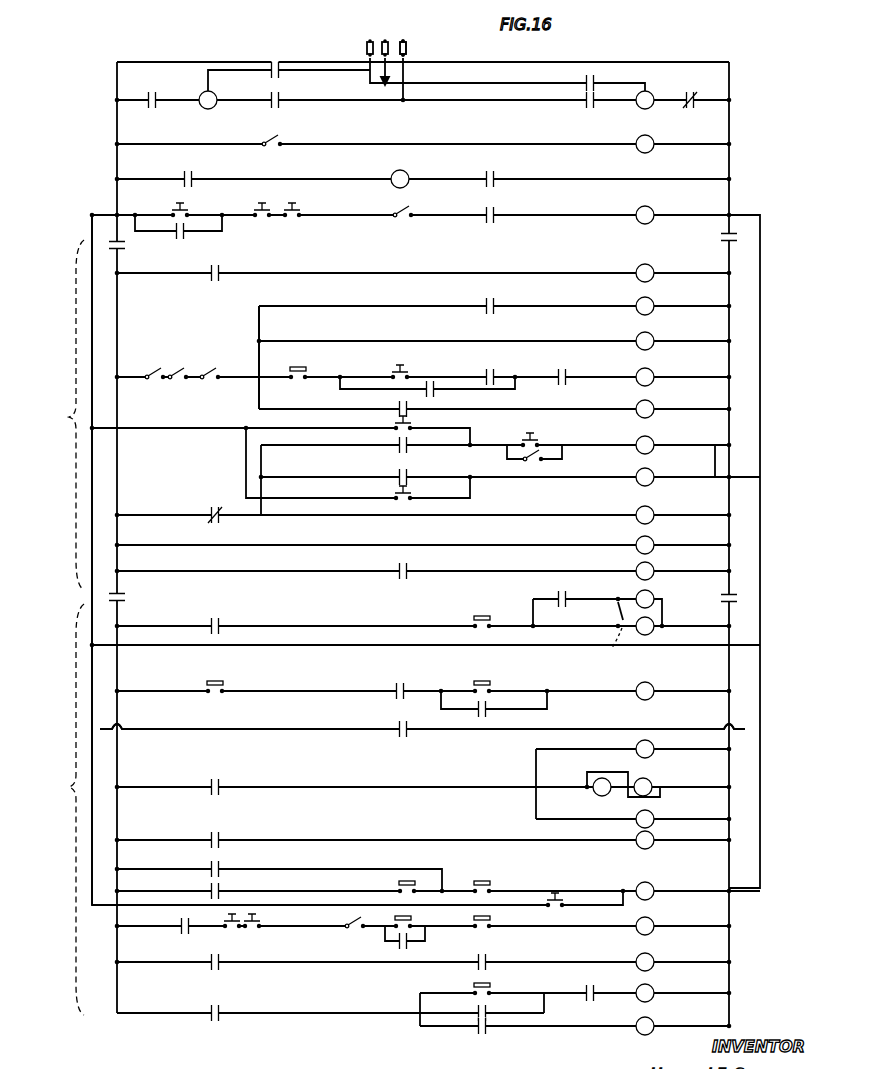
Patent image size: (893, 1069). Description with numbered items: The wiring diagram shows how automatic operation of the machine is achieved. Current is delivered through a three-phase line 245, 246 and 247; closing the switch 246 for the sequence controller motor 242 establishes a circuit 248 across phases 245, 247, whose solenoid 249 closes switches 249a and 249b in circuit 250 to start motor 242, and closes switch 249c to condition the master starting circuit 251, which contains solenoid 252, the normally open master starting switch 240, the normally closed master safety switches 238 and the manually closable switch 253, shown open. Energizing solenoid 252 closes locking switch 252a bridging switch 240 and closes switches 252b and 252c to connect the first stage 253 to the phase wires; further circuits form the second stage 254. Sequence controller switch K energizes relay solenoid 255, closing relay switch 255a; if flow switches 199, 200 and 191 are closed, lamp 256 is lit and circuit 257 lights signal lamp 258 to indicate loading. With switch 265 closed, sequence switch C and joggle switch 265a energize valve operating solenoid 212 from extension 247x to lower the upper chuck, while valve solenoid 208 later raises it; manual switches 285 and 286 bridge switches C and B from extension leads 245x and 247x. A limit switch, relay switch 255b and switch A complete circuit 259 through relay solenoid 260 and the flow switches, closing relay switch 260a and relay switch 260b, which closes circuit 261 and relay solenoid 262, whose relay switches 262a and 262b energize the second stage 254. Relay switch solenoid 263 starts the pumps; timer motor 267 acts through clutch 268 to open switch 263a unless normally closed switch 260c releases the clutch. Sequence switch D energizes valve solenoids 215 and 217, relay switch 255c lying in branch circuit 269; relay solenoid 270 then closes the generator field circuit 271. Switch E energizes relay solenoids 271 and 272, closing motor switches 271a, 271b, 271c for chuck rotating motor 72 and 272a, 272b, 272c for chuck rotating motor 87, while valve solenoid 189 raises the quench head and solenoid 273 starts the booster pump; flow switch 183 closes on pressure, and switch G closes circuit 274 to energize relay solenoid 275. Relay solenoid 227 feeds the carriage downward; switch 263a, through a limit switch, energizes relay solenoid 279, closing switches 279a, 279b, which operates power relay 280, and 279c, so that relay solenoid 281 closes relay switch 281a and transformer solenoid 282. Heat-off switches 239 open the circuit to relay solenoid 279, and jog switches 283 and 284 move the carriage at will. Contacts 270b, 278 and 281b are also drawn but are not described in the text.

The phase line 245 is at (172, 62).
The switch 246 is at (405, 65).
The phase line 247 is at (612, 62).
The motor switch 271a is at (148, 99).
The motor switch 271b is at (279, 74).
The motor switch 271c is at (279, 104).
The chuck rotating motor 72 is at (209, 110).
The chuck rotating motor 87 is at (652, 96).
The motor switch 272a is at (589, 83).
The motor switch 272b is at (590, 104).
The motor switch 272c is at (692, 109).
The circuit 248 is at (364, 134).
The solenoid 249 is at (652, 146).
The switch 249a is at (200, 168).
The switch 249b is at (492, 185).
The switch 249c is at (491, 205).
The sequence controller motor 242 is at (407, 173).
The circuit 250 is at (525, 177).
The master starting switch 240 is at (185, 212).
The master safety switches 238 is at (293, 203).
The master starting circuit 251 is at (362, 213).
The manually closable switch; first stage 253 is at (404, 219).
The solenoid 252 is at (654, 213).
The normally open switch 252a is at (185, 236).
The switch 252b is at (123, 247).
The switch 252c is at (725, 239).
The relay solenoid 255 is at (652, 271).
The relay switch 255a is at (494, 306).
The relay switch 255b is at (491, 375).
The relay switch 255c is at (562, 595).
The circuit 257 is at (342, 300).
The signal lamp 258 is at (652, 304).
The lamp 256 is at (652, 339).
The flow switch 199 is at (147, 367).
The flow switch 200 is at (184, 363).
The flow switch 191 is at (208, 376).
The circuit 259 is at (394, 377).
The relay solenoid 260 is at (652, 374).
The relay switch 260a is at (432, 390).
The relay switch 260b is at (400, 406).
The normally closed switch 260c is at (216, 505).
The circuit 261 is at (568, 409).
The relay solenoid 262 is at (652, 406).
The relay switch 262a is at (126, 599).
The relay switch 262b is at (725, 601).
The manual switch 285 is at (396, 426).
The manual switch 286 is at (413, 497).
The switch 265 is at (533, 462).
The joggle switch 265a is at (535, 439).
The valve operating solenoid 212 is at (652, 442).
The valve solenoid 208 is at (652, 475).
The clutch 268 is at (652, 510).
The timer motor 267 is at (652, 542).
The relay switch solenoid 263 is at (652, 568).
The switch 263a is at (404, 577).
The valve solenoid 215 is at (653, 598).
The valve solenoid 217 is at (652, 632).
The branch circuit 269 is at (624, 590).
The jog switch 283 is at (615, 648).
The extension lead 247x is at (761, 651).
The extension lead 245x is at (85, 560).
The second stage 254 is at (69, 790).
The relay solenoid 270 is at (653, 691).
The contact 270b is at (404, 736).
The relay solenoid; generator field circuit 271 is at (228, 731).
The valve solenoid 189 is at (653, 750).
The relay solenoid 272 is at (652, 786).
The solenoid 273 is at (653, 819).
The circuit 274 is at (250, 843).
The relay solenoid 275 is at (652, 842).
The line 278 is at (252, 895).
The relay solenoid 227 is at (652, 890).
The jog switch 284 is at (550, 909).
The relay solenoid 279 is at (652, 924).
The switch 279a is at (408, 943).
The switch 279b is at (490, 961).
The switch 279c is at (600, 987).
The heat-off switches 239 is at (230, 934).
The flow switch 183 is at (355, 932).
The power relay 280 is at (652, 960).
The relay solenoid 281 is at (652, 992).
The relay switch 281a is at (505, 1008).
The contact 281b is at (487, 1031).
The transformer solenoid 282 is at (653, 1026).